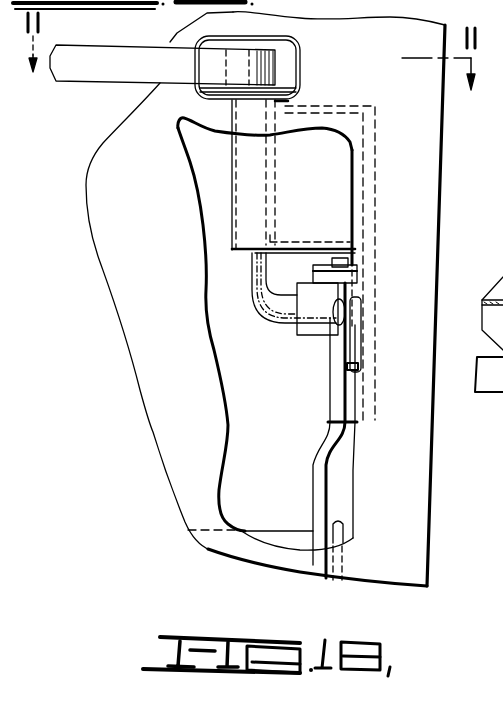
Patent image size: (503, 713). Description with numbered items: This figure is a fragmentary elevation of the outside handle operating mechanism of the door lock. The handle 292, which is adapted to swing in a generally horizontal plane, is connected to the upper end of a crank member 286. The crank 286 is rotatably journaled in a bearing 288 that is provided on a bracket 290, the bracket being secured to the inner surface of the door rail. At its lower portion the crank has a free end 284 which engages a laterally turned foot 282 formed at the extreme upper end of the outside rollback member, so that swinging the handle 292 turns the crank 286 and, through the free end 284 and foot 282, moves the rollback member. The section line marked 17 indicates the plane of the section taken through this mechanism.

The section line 17- 17 is at (248, 68).
The laterally turned foot 282 is at (317, 330).
The free end 284 is at (279, 318).
The crank member 286 is at (248, 271).
The bearing 288 is at (272, 181).
The bracket 290 is at (277, 240).
The handle 292 is at (92, 70).